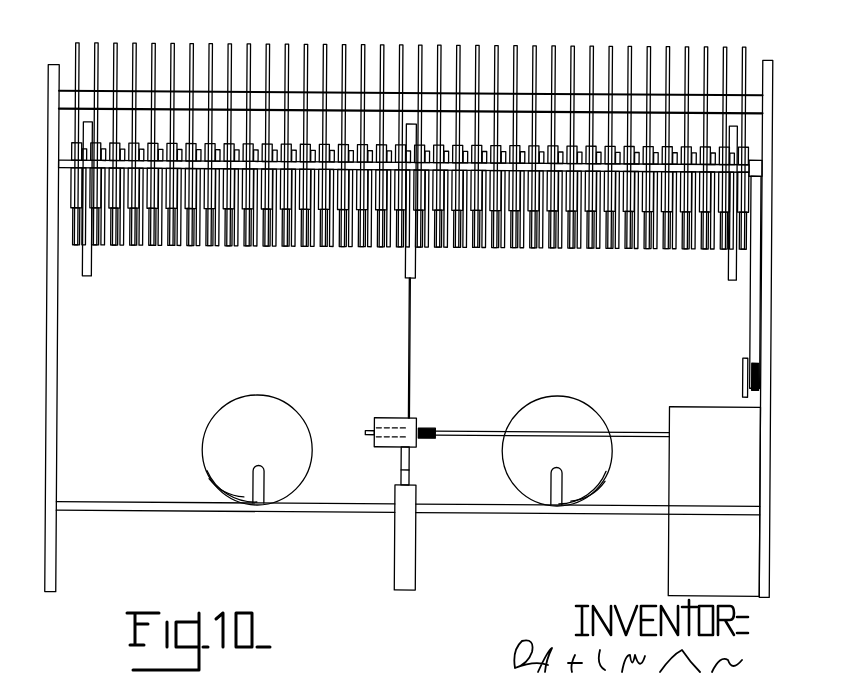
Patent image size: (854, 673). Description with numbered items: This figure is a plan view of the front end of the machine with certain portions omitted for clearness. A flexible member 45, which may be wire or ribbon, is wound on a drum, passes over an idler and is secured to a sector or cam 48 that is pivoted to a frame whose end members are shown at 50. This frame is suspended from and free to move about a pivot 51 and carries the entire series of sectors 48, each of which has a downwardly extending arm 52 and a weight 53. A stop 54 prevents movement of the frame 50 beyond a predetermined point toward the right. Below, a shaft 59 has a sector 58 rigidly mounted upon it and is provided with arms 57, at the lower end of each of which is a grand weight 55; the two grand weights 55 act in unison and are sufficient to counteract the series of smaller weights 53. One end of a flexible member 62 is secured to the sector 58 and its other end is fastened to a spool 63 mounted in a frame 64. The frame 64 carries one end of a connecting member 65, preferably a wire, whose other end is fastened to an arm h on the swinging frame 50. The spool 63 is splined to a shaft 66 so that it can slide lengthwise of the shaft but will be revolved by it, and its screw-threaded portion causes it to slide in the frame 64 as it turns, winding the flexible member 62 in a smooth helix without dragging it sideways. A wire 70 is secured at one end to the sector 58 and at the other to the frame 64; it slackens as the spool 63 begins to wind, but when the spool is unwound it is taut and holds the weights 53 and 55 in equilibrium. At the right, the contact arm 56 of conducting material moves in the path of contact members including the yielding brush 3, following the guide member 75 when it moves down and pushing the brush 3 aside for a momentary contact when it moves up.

The flexible member 45 is at (688, 57).
The stop 54 is at (580, 107).
The weight 53 is at (263, 148).
The downwardly extending arm 52 is at (273, 150).
The pivot 51 is at (63, 164).
The sector or cam 48 is at (172, 248).
The frame end member 50 is at (414, 124).
The arm h is at (413, 265).
The connecting member 65 is at (410, 340).
The frame 64 is at (386, 420).
The spool 63 is at (427, 430).
The shaft 66 is at (492, 420).
The flexible member 62 is at (411, 462).
The wire 70 is at (401, 475).
The sector 58 is at (417, 550).
The shaft 59 is at (103, 511).
The grand weight 55 is at (238, 410).
The arm 57 is at (255, 486).
The contact arm 56 is at (750, 323).
The guide member 75 is at (743, 380).
The contact member 3 is at (751, 386).